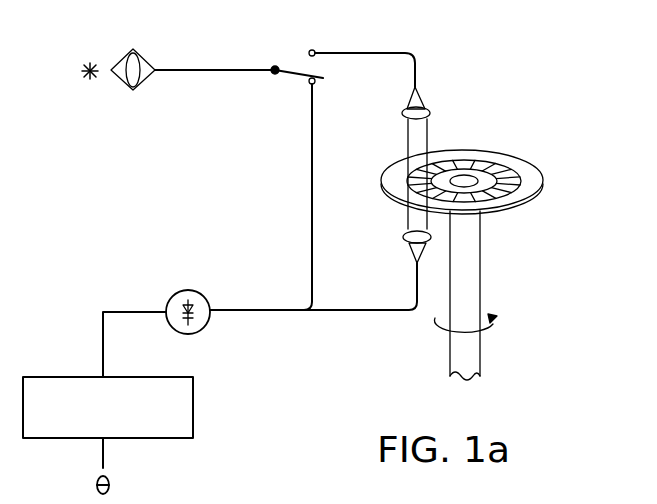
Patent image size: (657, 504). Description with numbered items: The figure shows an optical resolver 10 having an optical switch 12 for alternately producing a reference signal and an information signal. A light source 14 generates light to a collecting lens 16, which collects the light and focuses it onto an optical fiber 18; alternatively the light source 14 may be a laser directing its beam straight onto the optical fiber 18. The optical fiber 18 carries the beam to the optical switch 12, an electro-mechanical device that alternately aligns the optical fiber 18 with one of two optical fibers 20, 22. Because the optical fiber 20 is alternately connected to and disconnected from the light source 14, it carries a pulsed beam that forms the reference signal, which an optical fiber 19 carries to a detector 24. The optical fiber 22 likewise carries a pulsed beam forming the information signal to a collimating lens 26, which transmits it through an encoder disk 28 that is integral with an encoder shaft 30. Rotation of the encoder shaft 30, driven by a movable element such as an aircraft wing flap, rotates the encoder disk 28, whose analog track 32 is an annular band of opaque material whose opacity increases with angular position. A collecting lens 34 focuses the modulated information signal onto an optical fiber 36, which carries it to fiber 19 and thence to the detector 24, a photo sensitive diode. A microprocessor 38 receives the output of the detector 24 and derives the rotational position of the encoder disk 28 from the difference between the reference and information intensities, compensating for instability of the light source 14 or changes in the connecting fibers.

The optical resolver 10 is at (518, 110).
The optical switch 12 is at (297, 82).
The light source 14 is at (86, 78).
The collecting lens 16 is at (141, 76).
The optical fiber 18 is at (205, 68).
The optical fiber 19 is at (274, 313).
The optical fiber 20 is at (311, 183).
The optical fiber 22 is at (405, 50).
The detector 24 is at (172, 295).
The collimating lens 26 is at (402, 115).
The encoder disk 28 is at (527, 157).
The encoder shaft 30 is at (475, 356).
The analog track 32 is at (523, 172).
The collecting lens 34 is at (404, 238).
The optical fiber 36 is at (372, 313).
The microprocessor 38 is at (53, 376).